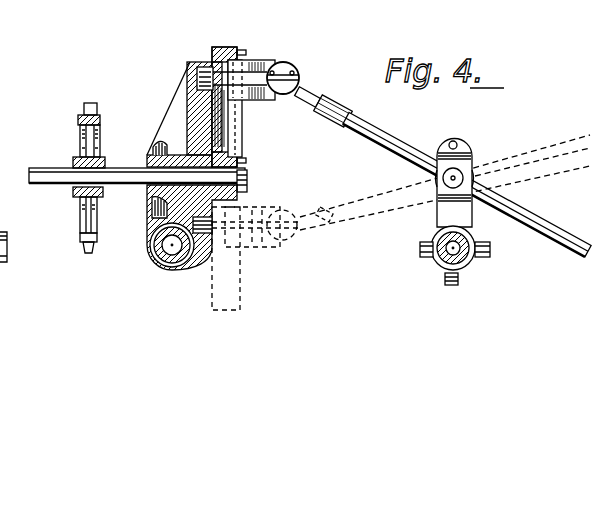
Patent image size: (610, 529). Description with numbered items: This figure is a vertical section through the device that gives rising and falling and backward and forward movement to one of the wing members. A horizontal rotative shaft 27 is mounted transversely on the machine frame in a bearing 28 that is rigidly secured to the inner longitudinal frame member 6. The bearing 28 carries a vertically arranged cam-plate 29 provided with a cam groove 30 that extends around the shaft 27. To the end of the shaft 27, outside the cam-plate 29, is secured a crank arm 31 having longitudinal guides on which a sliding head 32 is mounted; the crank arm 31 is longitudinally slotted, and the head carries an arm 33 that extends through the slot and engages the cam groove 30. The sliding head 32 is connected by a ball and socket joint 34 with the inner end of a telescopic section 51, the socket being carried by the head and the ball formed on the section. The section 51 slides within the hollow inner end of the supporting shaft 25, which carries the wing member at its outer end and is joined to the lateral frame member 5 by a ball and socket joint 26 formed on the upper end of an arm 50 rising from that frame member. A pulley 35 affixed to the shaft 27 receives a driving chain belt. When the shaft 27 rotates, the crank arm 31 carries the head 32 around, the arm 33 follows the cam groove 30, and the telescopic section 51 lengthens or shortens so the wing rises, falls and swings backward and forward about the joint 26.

The lateral frame member 5 is at (468, 258).
The inner longitudinal frame member 6 is at (157, 264).
The supporting shaft 25 is at (397, 140).
The ball and socket joint 26 is at (456, 174).
The rotative shaft 27 is at (43, 167).
The bearing 28 is at (156, 153).
The cam-plate 29 is at (192, 110).
The cam groove 30 is at (198, 252).
The crank arm 31 is at (222, 135).
The sliding head 32 is at (238, 75).
The arm 33 is at (202, 67).
The ball and socket joint 34 is at (295, 69).
The pulley 35 is at (89, 103).
The arm 50 is at (440, 210).
The telescopic section 51 is at (311, 91).